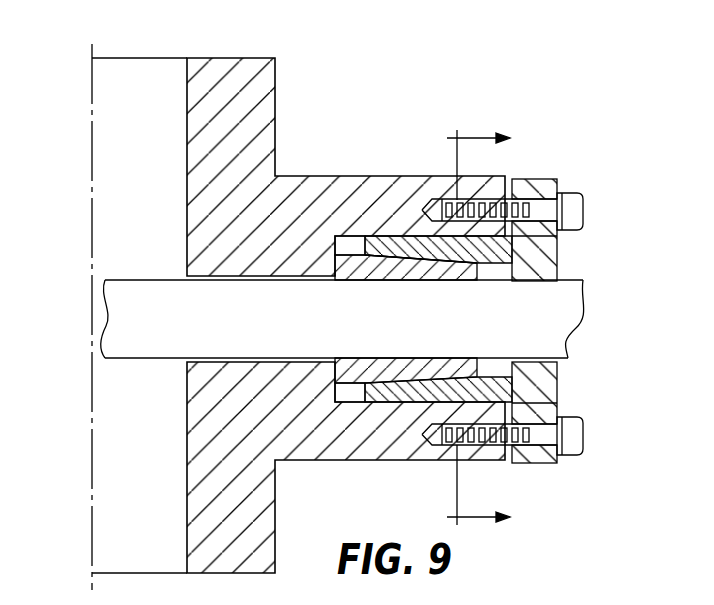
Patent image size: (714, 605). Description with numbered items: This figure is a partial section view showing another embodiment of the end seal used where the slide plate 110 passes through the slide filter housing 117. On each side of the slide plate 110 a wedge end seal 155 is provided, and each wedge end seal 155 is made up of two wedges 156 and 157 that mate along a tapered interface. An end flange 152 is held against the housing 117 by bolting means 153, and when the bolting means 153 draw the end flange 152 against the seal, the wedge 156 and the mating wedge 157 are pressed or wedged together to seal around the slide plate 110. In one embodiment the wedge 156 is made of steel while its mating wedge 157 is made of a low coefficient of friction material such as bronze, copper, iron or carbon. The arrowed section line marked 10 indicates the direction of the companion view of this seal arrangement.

The slide filter housing 117 is at (273, 62).
The slide plate 110 is at (115, 318).
The end flange 152 is at (553, 182).
The bolting means 153 is at (583, 205).
The wedge end seal 155 is at (507, 251).
The wedge 156 is at (400, 253).
The wedge 157 is at (353, 278).
The section line 10- 10 is at (491, 328).